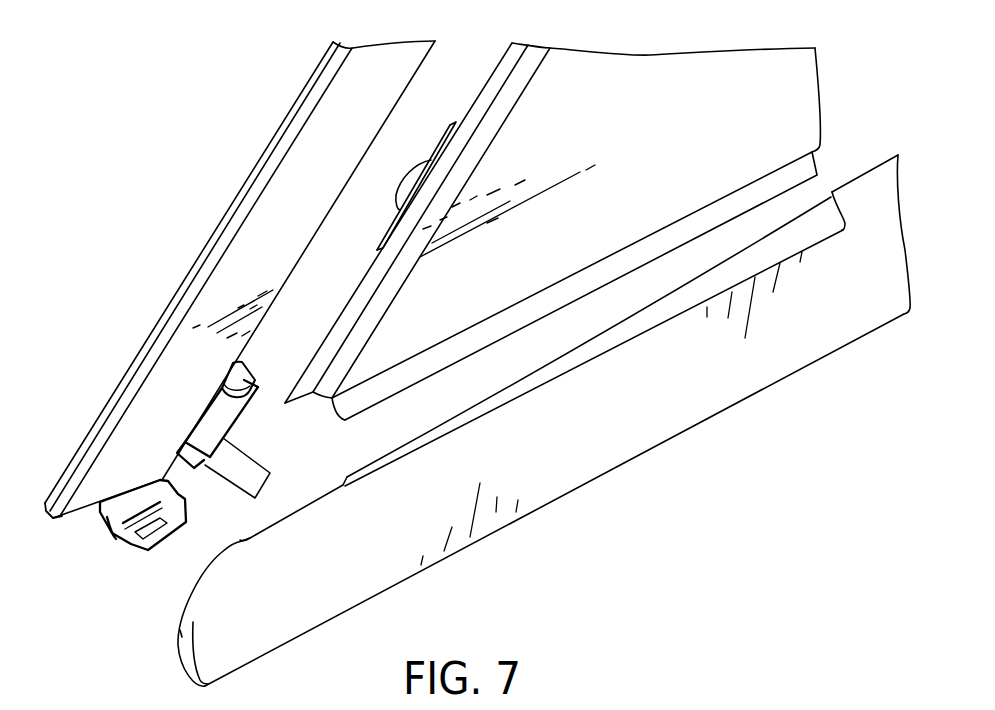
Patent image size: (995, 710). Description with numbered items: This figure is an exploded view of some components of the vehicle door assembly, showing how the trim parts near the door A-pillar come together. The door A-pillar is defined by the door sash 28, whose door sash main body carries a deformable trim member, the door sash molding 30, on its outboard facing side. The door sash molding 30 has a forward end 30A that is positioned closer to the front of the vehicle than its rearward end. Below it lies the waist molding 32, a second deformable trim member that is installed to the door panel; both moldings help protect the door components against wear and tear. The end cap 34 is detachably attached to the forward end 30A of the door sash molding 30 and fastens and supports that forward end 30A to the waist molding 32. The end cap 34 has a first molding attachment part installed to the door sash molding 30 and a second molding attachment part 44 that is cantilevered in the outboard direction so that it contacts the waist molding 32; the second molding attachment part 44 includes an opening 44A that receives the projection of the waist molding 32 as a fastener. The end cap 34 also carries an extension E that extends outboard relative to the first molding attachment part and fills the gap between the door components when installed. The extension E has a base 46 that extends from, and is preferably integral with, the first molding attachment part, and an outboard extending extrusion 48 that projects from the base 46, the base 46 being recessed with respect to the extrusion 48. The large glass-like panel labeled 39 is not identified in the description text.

The door sash 28 is at (172, 205).
The door sash molding 30 is at (300, 182).
The forward end 30A is at (60, 503).
The waist molding 32 is at (613, 417).
The end cap 34 is at (185, 653).
The second glass panel 39 is at (662, 93).
The second molding attachment part 44 is at (117, 538).
The opening 44A is at (150, 532).
The base 46 is at (233, 377).
The extrusion 48 is at (218, 417).
The extension E is at (187, 463).